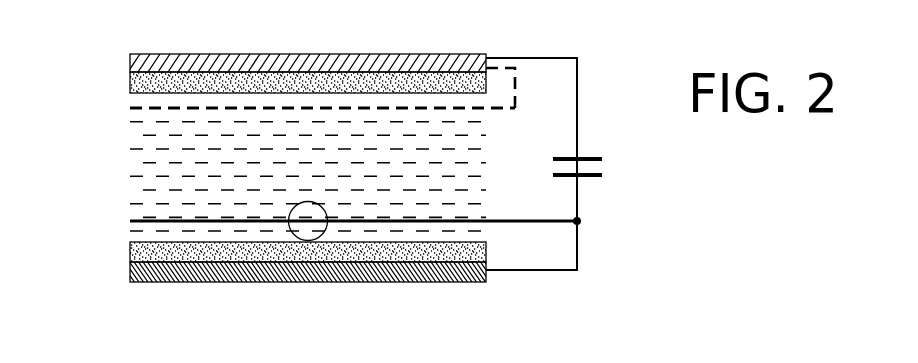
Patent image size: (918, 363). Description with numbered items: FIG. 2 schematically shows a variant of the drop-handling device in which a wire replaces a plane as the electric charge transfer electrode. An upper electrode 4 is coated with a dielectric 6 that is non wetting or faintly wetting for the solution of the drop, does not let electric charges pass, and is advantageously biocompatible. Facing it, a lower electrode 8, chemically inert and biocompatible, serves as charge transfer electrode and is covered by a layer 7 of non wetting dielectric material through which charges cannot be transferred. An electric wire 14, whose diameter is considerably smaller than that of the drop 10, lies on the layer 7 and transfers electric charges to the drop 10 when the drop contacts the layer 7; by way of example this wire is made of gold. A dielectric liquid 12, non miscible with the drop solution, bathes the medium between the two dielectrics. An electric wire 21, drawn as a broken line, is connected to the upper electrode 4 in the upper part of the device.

The electrode 4 is at (130, 61).
The dielectric 6 is at (130, 80).
The electric wire 21 is at (142, 109).
The dielectric liquid 12 is at (150, 180).
The drop 10 is at (303, 207).
The electric wire 14 is at (450, 220).
The layer 7 is at (130, 249).
The electrode 8 is at (130, 272).